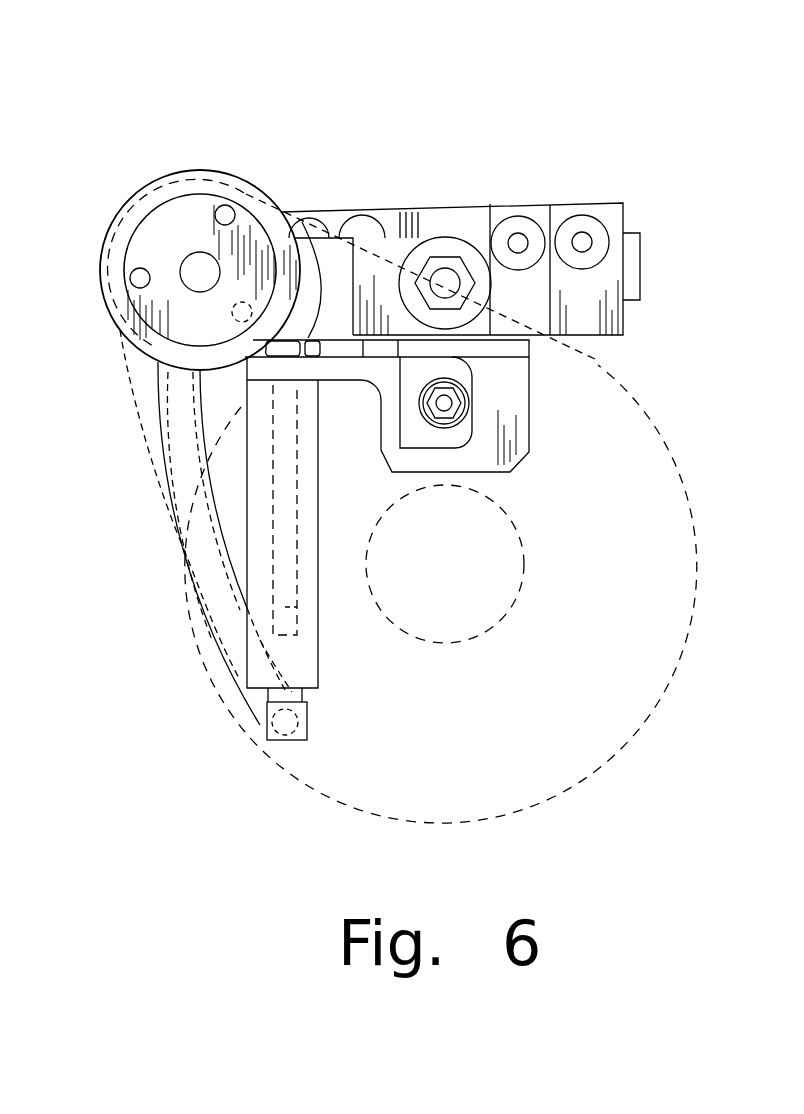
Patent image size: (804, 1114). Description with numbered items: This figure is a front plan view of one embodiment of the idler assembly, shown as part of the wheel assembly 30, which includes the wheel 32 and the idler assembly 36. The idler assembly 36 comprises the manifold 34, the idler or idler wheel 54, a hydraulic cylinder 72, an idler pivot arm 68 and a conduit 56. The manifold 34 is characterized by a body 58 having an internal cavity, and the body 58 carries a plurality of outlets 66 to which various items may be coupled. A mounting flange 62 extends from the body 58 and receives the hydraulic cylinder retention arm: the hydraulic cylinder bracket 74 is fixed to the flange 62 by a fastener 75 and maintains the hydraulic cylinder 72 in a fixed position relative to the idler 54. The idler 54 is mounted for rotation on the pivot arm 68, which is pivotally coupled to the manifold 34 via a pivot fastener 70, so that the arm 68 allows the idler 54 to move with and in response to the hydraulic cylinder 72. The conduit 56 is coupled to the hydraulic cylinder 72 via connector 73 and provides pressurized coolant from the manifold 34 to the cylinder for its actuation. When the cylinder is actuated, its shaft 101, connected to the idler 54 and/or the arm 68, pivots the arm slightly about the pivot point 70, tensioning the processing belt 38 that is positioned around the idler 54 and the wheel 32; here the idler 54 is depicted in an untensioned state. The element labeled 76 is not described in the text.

The wheel assembly 30 is at (637, 101).
The wheel 32 is at (648, 690).
The manifold 34 is at (625, 201).
The idler assembly 36 is at (118, 375).
The processing belt 38 is at (143, 445).
The idler wheel 54 is at (167, 217).
The conduit 56 is at (192, 551).
The body 58 is at (463, 218).
The mounting flange 62 is at (528, 437).
The outlets 66 is at (575, 215).
The idler pivot arm 68 is at (334, 262).
The pivot fastener 70 is at (443, 277).
The hydraulic cylinder 72 is at (312, 665).
The connector 73 is at (290, 742).
The hydraulic cylinder bracket 74 is at (412, 368).
The fastener 75 is at (450, 402).
The roller 76 is at (302, 222).
The shaft 101 is at (325, 633).